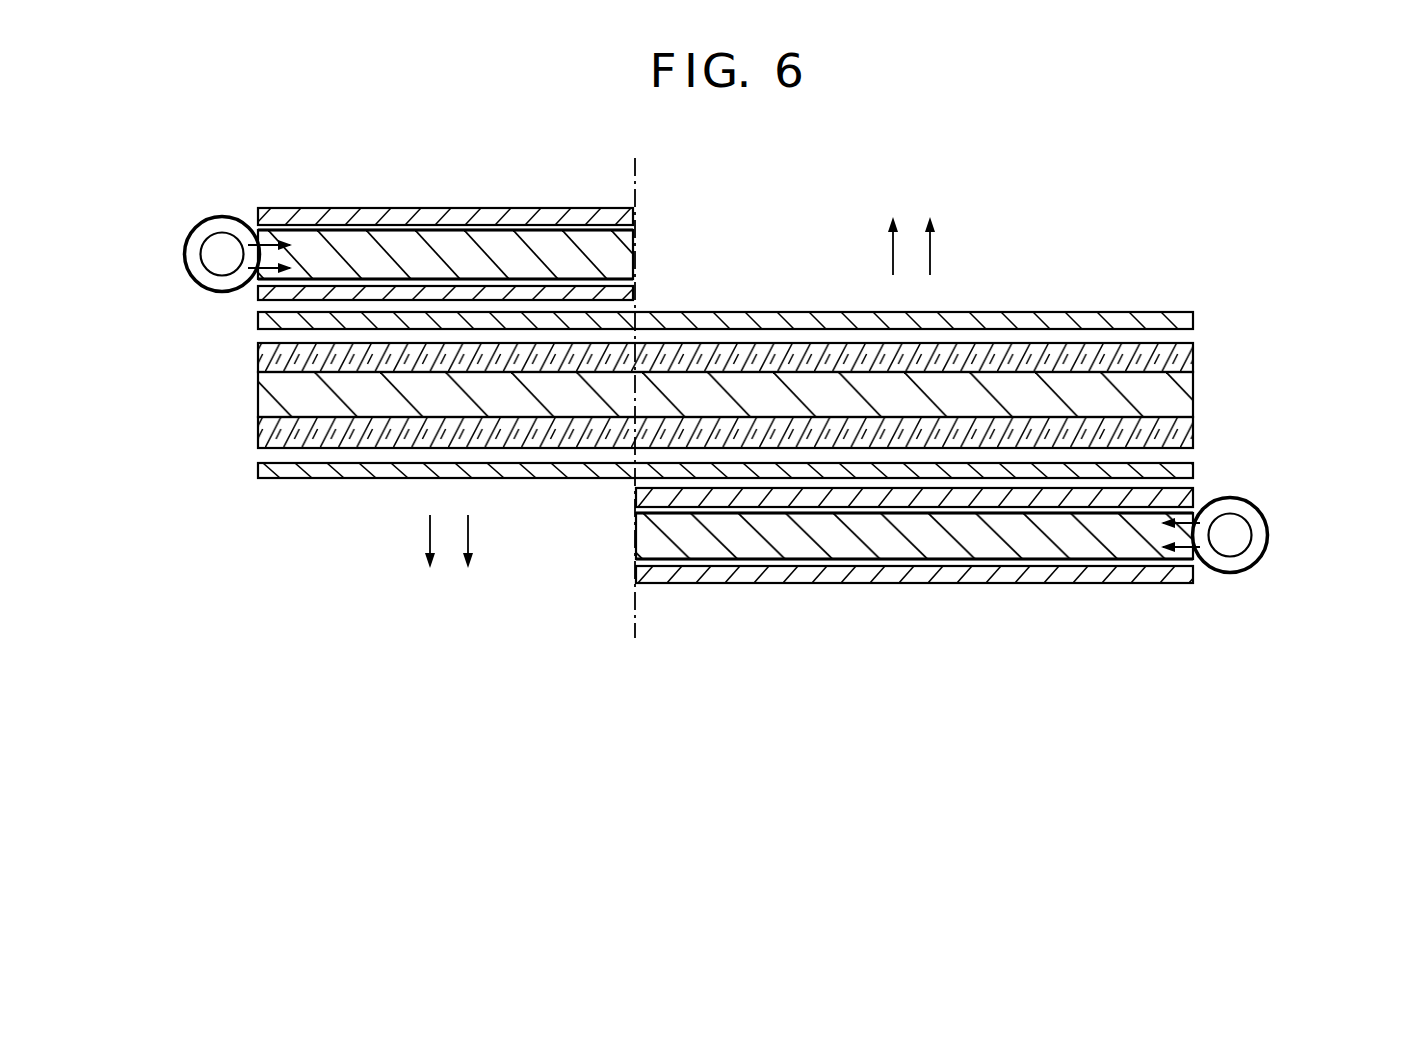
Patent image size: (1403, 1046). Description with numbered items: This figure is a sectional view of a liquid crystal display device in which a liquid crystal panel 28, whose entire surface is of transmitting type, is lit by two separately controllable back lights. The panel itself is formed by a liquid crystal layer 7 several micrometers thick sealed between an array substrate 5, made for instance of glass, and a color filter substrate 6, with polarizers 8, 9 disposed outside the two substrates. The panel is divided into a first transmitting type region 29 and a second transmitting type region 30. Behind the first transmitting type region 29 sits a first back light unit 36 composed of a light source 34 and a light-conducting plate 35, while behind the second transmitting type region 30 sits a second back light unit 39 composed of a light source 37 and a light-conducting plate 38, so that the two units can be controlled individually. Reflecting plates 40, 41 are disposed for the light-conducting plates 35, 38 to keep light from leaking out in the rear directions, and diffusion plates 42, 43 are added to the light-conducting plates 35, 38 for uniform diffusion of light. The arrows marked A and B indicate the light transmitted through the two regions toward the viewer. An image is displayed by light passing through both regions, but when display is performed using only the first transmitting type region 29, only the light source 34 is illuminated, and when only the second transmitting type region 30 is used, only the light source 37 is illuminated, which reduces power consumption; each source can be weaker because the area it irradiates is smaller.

The array substrate 5 is at (275, 360).
The color filter substrate 6 is at (270, 435).
The liquid crystal layer 7 is at (275, 397).
The polarizer 8 is at (280, 472).
The polarizer 9 is at (283, 320).
The liquid crystal panel 28 is at (1246, 387).
The first transmitting type region 29 is at (1005, 257).
The second transmitting type region 30 is at (347, 531).
The light source 34 is at (1228, 540).
The light-conducting plate 35 is at (1028, 547).
The first back light unit 36 is at (1288, 559).
The light source 37 is at (222, 252).
The light-conducting plate 38 is at (360, 247).
The second back light unit 39 is at (168, 214).
The reflecting plate 40 is at (1147, 573).
The reflecting plate 41 is at (420, 217).
The diffusion plate 42 is at (1173, 500).
The diffusion plate 43 is at (258, 304).
The gas flow direction A is at (890, 255).
The gas flow direction B is at (469, 532).